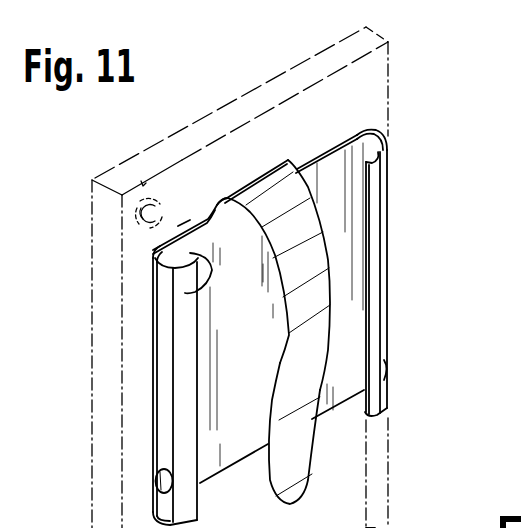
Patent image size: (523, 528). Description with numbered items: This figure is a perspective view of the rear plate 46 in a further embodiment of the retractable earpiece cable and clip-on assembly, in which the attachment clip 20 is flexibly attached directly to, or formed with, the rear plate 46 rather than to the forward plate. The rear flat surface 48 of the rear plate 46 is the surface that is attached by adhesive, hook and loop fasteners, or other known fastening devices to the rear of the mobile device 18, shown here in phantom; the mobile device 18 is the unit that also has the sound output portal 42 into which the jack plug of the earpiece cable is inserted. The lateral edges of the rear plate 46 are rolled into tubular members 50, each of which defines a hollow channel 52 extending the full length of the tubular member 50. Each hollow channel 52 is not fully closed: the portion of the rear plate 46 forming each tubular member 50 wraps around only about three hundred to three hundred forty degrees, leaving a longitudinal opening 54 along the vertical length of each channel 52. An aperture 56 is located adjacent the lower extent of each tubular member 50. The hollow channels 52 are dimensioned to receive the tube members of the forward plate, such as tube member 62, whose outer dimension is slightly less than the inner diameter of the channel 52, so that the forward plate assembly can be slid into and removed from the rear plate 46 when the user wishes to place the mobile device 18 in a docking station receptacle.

The mobile device 18 is at (375, 32).
The attachment clip 20 is at (305, 451).
The sound output portal 42 is at (133, 170).
The rear plate 46 is at (345, 327).
The rear flat surface 48 is at (183, 230).
The tubular members 50 is at (167, 364).
The hollow channel 52 is at (155, 262).
The opening 54 is at (207, 284).
The aperture 56 is at (153, 481).
The tube member 62 is at (372, 527).